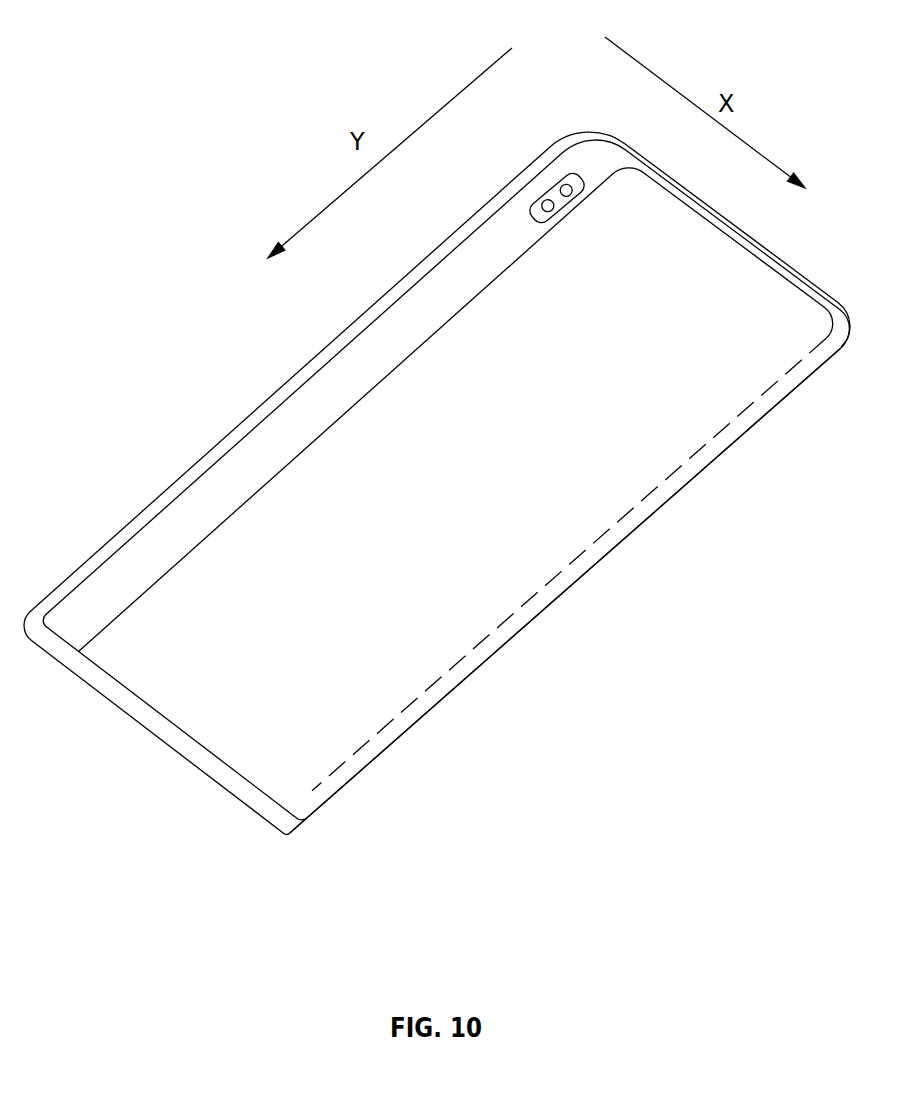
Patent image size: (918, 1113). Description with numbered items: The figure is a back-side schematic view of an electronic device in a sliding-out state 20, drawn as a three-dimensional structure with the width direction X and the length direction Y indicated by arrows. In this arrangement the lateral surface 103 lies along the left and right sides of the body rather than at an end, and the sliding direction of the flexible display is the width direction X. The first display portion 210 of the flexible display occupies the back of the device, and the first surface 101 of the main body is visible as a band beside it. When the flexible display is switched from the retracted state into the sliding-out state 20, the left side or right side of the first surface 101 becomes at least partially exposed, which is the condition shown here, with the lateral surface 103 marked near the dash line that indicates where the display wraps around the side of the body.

The sliding-out state 20 is at (243, 157).
The first surface 101 is at (175, 528).
The first display portion 210 is at (280, 507).
The lateral surface 103 is at (405, 730).